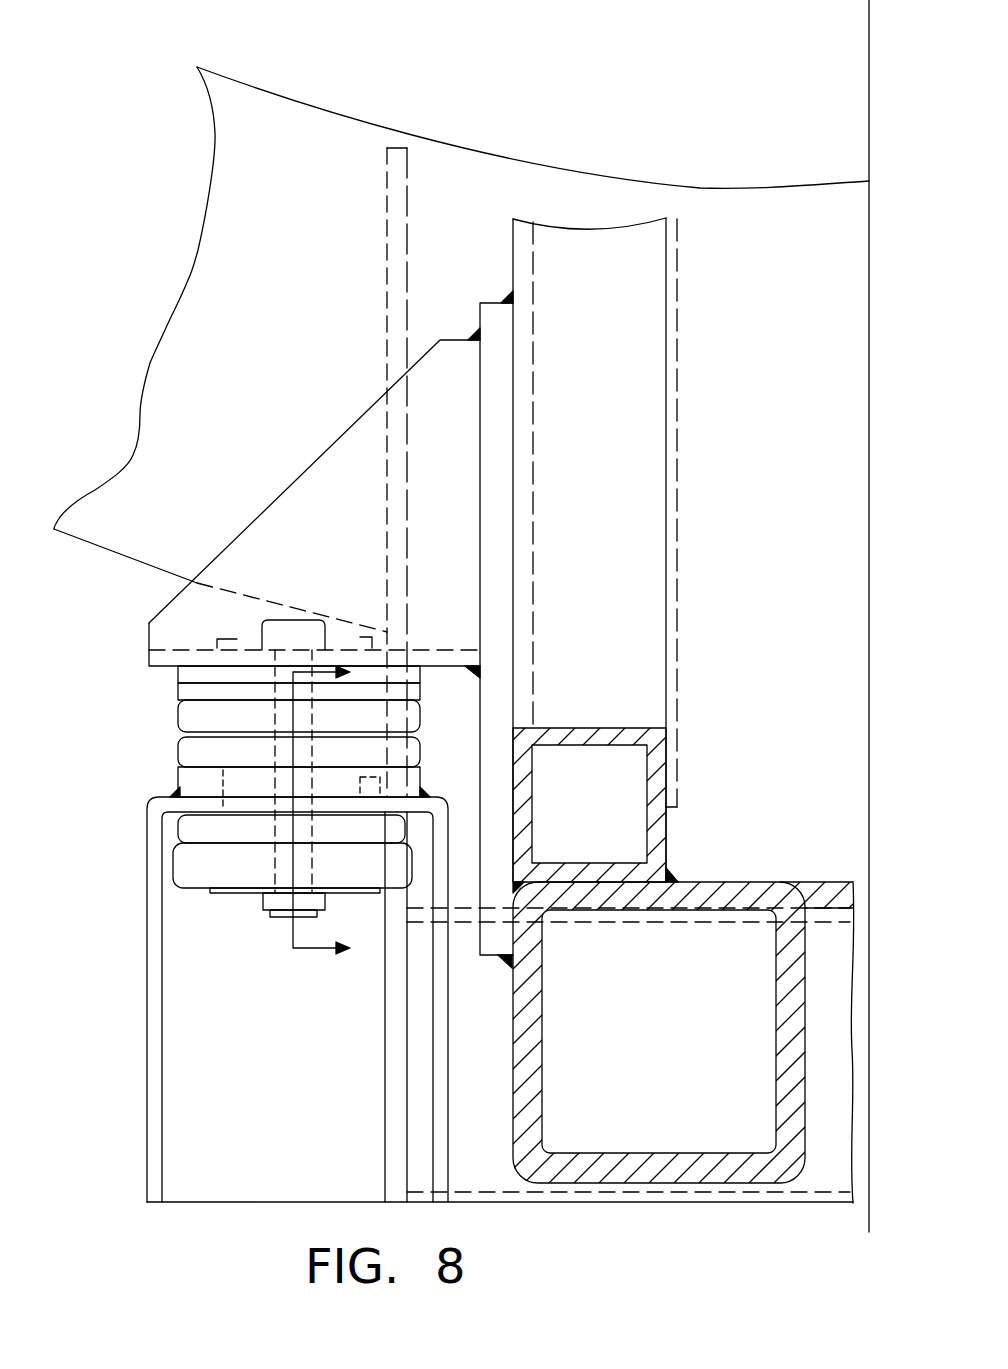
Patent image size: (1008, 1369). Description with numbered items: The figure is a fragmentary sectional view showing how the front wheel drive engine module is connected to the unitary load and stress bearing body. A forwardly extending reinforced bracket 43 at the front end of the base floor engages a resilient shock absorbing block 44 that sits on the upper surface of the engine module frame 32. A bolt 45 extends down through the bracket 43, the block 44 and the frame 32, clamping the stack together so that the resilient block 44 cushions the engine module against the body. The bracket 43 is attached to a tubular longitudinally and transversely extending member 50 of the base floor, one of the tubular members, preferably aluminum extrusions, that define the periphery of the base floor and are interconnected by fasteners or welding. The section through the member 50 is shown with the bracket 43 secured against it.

The engine module frame 32 is at (153, 927).
The reinforced bracket 43 is at (357, 468).
The resilient shock absorbing block 44 is at (210, 713).
The bolt 45 is at (285, 918).
The tubular longitudinally and transversely extending member 50 is at (793, 942).